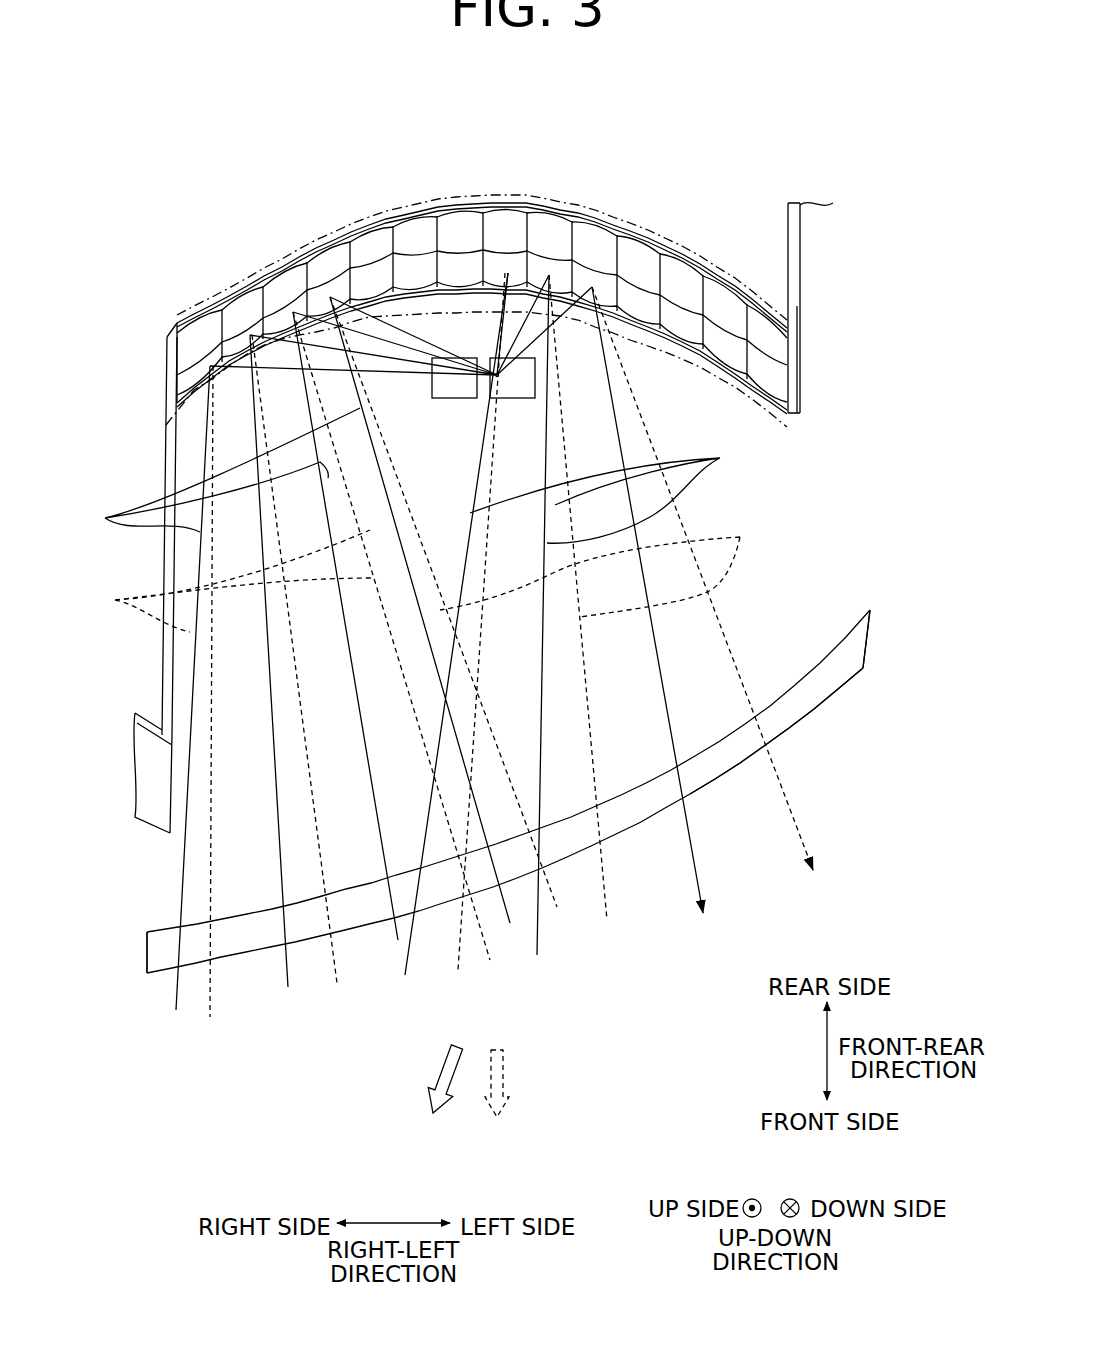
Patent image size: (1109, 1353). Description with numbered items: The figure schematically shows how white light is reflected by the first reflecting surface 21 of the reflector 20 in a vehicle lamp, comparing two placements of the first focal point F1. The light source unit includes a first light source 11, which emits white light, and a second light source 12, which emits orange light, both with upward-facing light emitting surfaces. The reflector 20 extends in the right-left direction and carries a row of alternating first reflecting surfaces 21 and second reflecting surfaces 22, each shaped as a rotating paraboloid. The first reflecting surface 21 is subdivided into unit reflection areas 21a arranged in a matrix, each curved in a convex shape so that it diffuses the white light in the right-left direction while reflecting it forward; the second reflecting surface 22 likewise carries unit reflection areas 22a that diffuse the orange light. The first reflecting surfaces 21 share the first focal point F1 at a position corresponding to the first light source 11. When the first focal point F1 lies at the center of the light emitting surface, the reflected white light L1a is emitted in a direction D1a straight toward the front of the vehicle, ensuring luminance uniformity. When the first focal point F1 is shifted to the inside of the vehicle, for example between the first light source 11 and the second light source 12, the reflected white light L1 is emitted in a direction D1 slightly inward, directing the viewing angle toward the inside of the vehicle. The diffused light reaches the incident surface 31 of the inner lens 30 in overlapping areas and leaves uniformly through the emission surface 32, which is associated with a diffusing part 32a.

The reflector 20 is at (160, 353).
The first reflecting surface 21 is at (237, 278).
The unit reflection area 21a is at (287, 280).
The second reflecting surface 22 is at (380, 218).
The unit reflection area 22a is at (462, 232).
The first light source 11 is at (517, 400).
The second light source 12 is at (437, 400).
The first focal point F1 is at (470, 400).
The white light L1 is at (410, 475).
The white light L1a is at (427, 578).
The direction D1 is at (448, 1060).
The direction D1a is at (510, 1060).
The inner lens 30 is at (143, 953).
The incident surface 31 is at (160, 930).
The emission surface 32 is at (855, 683).
The diffusing part 32a is at (832, 714).